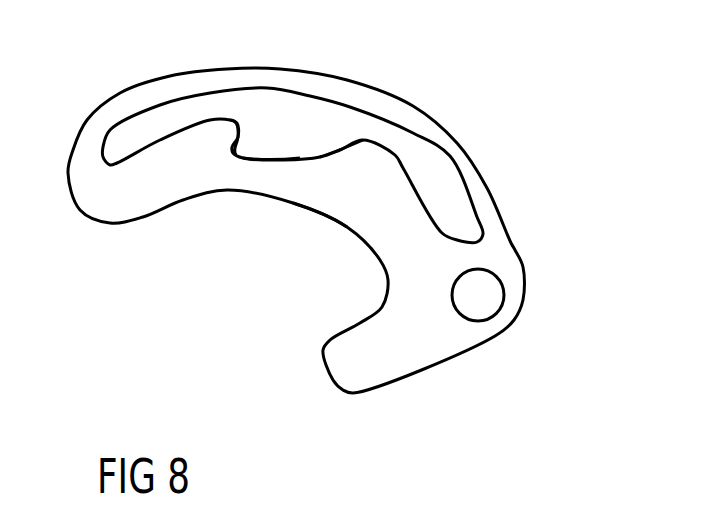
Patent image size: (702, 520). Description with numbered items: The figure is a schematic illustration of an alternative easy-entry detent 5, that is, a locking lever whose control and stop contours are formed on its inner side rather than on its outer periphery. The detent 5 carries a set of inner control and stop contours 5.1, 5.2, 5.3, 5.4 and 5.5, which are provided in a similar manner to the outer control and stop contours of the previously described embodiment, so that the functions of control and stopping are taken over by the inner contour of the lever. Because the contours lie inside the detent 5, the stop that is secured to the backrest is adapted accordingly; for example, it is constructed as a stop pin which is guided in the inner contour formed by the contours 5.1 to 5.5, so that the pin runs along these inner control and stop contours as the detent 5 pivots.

The easy-entry detent 5 is at (333, 203).
The inner control and stop contour 5.1 is at (389, 150).
The inner control and stop contour 5.2 is at (276, 150).
The inner control and stop contour 5.3 is at (242, 127).
The inner control and stop contour 5.4 is at (342, 142).
The inner control and stop contour 5.5 is at (341, 228).